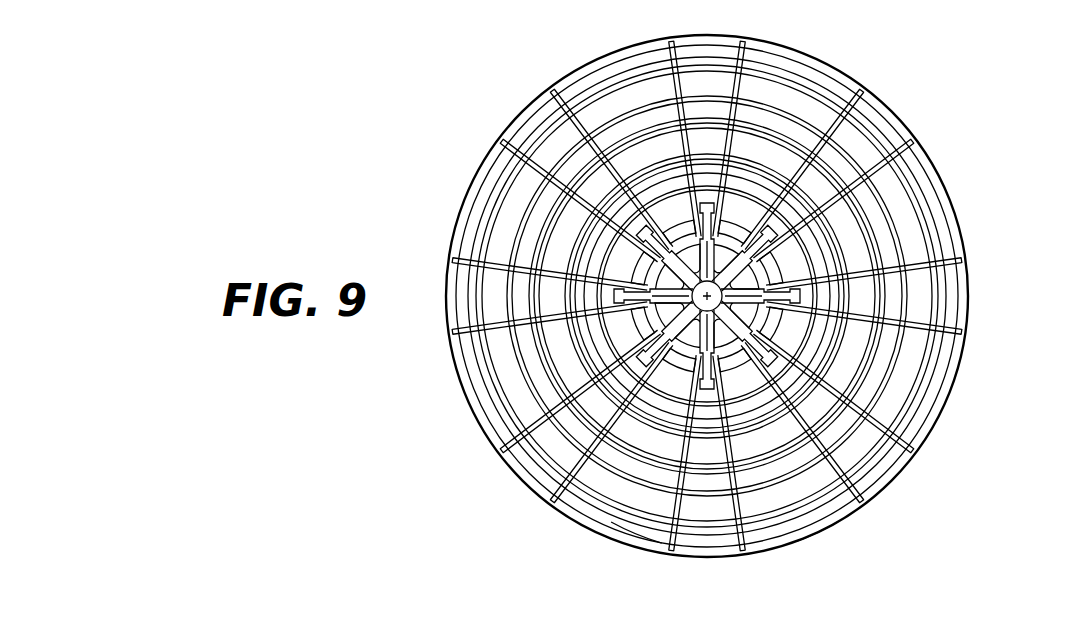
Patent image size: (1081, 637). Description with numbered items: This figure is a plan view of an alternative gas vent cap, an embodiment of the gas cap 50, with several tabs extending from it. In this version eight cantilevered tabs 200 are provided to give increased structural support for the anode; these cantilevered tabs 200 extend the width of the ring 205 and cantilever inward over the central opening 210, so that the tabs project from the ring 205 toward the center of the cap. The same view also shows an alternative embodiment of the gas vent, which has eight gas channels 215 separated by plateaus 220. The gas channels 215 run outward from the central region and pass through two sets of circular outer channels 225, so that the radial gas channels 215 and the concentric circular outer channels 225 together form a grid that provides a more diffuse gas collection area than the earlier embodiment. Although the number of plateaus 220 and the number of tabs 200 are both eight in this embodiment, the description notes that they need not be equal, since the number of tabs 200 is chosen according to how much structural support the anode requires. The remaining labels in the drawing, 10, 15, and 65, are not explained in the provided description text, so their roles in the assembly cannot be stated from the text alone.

The assembly 10 is at (978, 296).
The element 15 is at (676, 636).
The gas cap 50 is at (968, 412).
The element 65 is at (754, 633).
The cantilevered tabs 200 is at (623, 105).
The ring 205 is at (898, 118).
The central opening 210 is at (795, 545).
The gas channels 215 is at (572, 148).
The plateaus 220 is at (523, 462).
The circular outer channels 225 is at (620, 543).